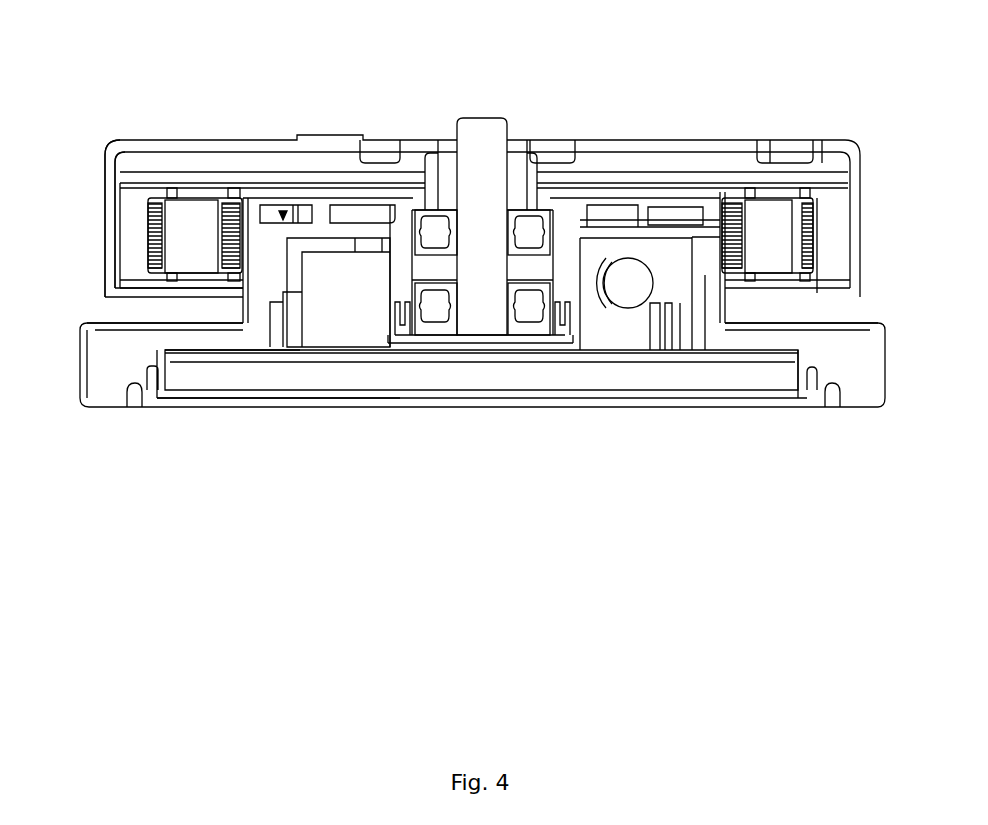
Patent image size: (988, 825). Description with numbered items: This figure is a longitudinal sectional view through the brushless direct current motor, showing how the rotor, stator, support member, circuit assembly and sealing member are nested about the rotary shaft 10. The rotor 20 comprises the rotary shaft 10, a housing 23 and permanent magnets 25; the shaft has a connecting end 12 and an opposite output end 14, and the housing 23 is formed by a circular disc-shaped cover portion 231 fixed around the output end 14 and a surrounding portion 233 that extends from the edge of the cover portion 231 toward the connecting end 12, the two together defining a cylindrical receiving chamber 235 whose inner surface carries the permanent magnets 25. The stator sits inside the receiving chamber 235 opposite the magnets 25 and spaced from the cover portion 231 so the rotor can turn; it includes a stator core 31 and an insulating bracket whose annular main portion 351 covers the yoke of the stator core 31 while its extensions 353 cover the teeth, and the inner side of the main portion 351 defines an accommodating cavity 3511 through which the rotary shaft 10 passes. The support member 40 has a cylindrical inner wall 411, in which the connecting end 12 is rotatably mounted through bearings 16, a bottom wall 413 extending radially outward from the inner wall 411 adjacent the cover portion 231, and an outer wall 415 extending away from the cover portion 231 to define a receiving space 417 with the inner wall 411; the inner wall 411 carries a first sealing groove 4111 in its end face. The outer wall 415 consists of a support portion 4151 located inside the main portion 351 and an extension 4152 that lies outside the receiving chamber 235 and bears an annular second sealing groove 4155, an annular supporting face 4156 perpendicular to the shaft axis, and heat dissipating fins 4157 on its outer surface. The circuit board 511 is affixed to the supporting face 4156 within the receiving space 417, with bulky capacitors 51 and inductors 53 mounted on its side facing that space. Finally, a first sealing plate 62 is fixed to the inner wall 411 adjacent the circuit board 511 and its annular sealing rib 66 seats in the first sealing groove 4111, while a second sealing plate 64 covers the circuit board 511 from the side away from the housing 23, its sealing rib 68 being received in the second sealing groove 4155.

The rotary shaft 10 is at (490, 243).
The connecting end 12 is at (482, 312).
The output end 14 is at (481, 130).
The bearings 16 is at (423, 223).
The rotor 20 is at (227, 158).
The housing 23 is at (162, 53).
The cover portion 231 is at (178, 157).
The surrounding portion 233 is at (107, 212).
The receiving chamber 235 is at (717, 192).
The permanent magnets 25 is at (127, 263).
The stator core 31 is at (223, 247).
The main portion 351 is at (245, 218).
The extensions 353 is at (197, 245).
The accommodating cavity 3511 is at (718, 235).
The support member 40 is at (283, 210).
The inner wall 411 is at (398, 293).
The first sealing groove 4111 is at (562, 318).
The bottom wall 413 is at (333, 233).
The outer wall 415 is at (883, 507).
The support portion 4151 is at (702, 273).
The extension 4152 is at (768, 328).
The second sealing groove 4155 is at (150, 370).
The supporting face 4156 is at (192, 353).
The heat dissipating fins 4157 is at (850, 357).
The receiving space 417 is at (670, 263).
The capacitors 51 is at (350, 298).
The circuit board 511 is at (207, 357).
The inductors 53 is at (627, 283).
The first sealing plate 62 is at (518, 343).
The second sealing plate 64 is at (167, 403).
The sealing rib 66 is at (562, 318).
The sealing rib 68 is at (152, 383).